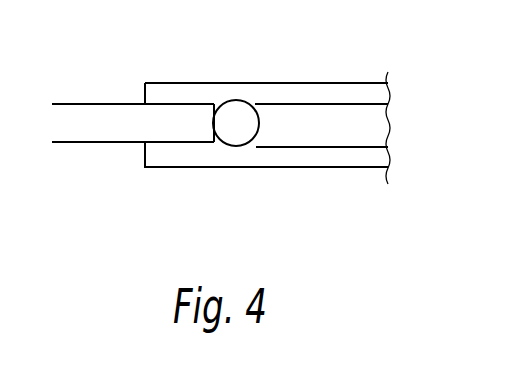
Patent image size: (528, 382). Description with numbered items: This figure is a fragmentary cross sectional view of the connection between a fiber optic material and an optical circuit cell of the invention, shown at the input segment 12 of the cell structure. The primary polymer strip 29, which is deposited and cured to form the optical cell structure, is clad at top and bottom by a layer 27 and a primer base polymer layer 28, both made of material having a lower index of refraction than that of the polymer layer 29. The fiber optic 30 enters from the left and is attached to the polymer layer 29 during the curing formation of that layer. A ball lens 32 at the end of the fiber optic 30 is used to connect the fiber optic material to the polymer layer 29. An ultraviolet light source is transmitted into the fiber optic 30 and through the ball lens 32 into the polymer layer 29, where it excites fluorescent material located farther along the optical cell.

The input segment 12 is at (304, 124).
The cladding layer 27 is at (393, 92).
The primer base polymer layer 28 is at (333, 158).
The primary polymeric layer 29 is at (367, 126).
The fiber optic 30 is at (100, 127).
The ball lens 32 is at (232, 132).